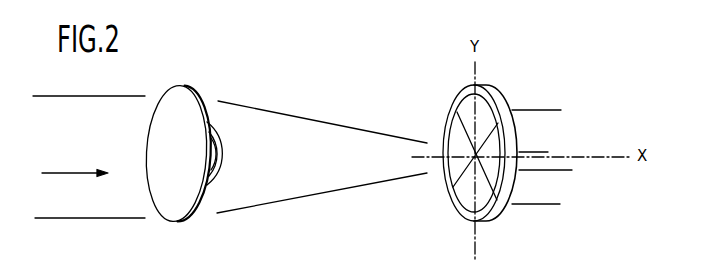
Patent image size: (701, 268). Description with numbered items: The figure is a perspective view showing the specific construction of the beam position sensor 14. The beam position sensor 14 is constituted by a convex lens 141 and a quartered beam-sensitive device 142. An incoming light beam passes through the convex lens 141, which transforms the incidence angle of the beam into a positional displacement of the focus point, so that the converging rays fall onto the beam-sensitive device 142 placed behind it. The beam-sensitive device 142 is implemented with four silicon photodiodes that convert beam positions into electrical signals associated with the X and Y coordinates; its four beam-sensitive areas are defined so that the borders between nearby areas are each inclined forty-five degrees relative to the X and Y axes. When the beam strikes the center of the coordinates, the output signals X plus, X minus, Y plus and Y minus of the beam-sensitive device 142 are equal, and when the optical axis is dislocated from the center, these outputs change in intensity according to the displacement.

The beam position sensor 14 is at (462, 63).
The convex lens 141 is at (171, 222).
The quartered beam-sensitive device 142 is at (486, 222).